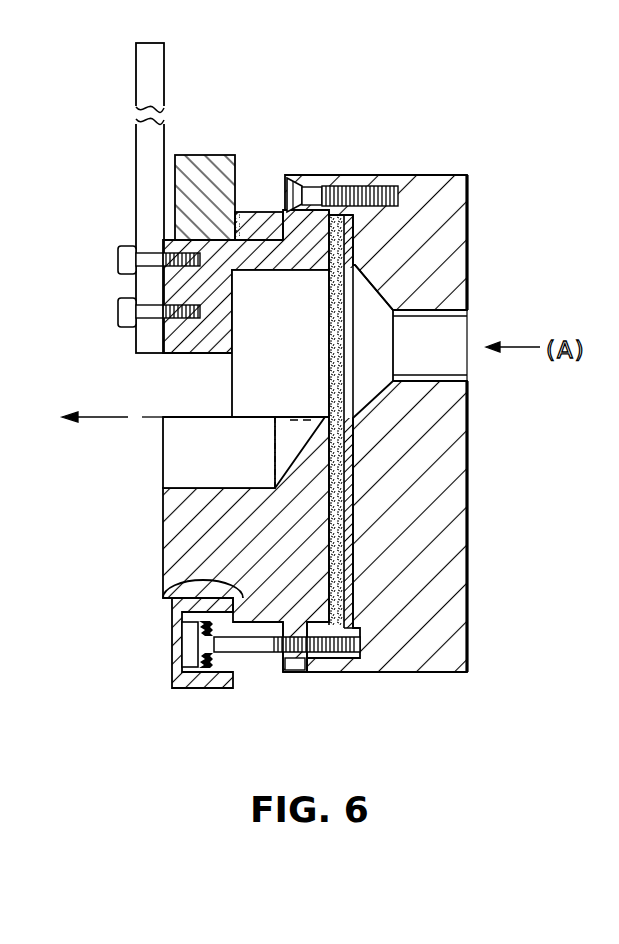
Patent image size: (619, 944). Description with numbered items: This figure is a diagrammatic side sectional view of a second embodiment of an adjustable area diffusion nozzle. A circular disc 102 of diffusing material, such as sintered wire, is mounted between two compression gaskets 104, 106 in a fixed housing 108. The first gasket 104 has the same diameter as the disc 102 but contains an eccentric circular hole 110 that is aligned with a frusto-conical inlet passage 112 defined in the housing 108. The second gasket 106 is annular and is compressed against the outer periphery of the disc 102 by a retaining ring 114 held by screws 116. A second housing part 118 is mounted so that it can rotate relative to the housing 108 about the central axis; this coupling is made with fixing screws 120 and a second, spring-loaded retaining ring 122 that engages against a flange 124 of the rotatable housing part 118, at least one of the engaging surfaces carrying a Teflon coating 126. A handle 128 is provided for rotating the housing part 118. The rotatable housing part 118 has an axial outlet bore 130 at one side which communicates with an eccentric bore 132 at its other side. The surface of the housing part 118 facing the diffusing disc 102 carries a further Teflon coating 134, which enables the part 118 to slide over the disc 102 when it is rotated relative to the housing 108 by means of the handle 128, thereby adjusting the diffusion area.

The circular disc 102 is at (400, 238).
The first gasket 104 is at (400, 262).
The second gasket 106 is at (347, 178).
The fixed housing 108 is at (443, 492).
The eccentric circular hole 110 is at (350, 412).
The frusto-conical inlet passage 112 is at (395, 372).
The retaining ring 114 is at (290, 672).
The screws 116 is at (385, 195).
The second housing part 118 is at (178, 560).
The fixing screws 120 is at (245, 655).
The spring-loaded retaining ring 122 is at (207, 688).
The flange 124 is at (258, 212).
The Teflon coating 126 is at (175, 607).
The handle 128 is at (138, 164).
The axial outlet bore 130 is at (163, 488).
The eccentric bore 132 is at (268, 270).
The Teflon coating 134 is at (353, 612).